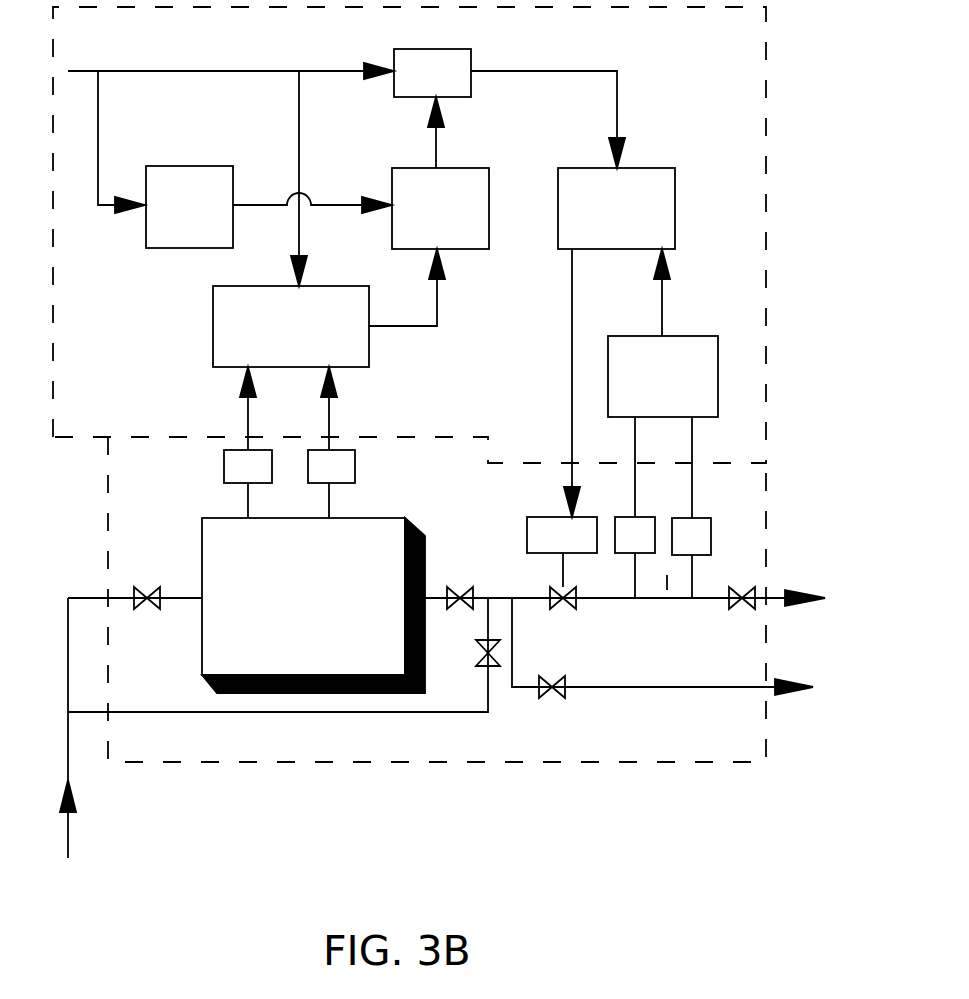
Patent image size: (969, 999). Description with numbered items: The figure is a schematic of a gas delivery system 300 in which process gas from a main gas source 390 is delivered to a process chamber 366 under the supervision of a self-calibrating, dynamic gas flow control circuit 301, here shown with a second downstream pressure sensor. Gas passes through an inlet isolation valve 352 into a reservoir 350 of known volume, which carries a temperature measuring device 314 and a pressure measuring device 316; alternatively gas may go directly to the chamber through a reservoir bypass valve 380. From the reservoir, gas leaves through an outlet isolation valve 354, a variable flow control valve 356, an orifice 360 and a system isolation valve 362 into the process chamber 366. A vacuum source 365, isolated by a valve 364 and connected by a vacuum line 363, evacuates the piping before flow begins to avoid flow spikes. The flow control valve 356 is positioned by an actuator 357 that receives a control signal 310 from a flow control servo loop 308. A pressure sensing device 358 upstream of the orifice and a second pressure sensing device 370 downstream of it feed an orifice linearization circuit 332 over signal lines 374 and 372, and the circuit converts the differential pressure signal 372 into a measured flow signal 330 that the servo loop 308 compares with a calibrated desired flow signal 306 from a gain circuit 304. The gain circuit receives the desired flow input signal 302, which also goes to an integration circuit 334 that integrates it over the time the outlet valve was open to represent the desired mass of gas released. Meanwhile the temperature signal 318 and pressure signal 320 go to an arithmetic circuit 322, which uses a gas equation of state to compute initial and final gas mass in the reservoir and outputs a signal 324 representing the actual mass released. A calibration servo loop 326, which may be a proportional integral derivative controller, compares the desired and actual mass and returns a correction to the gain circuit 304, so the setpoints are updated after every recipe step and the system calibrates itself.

The gas delivery system 300 is at (187, 753).
The self-calibrating, dynamic gas flow control circuit 301 is at (740, 57).
The desired flow input signal 302 is at (281, 71).
The gain circuit 304 is at (432, 73).
The calibrated desired flow signal 306 is at (548, 71).
The flow control servo loop 308 is at (616, 208).
The control signal 310 is at (572, 330).
The temperature measuring device 314 is at (224, 462).
The pressure measuring device 316 is at (355, 470).
The temperature signal 318 is at (248, 413).
The pressure signal 320 is at (329, 423).
The arithmetic circuit 322 is at (291, 219).
The output signal 324 is at (437, 312).
The calibration servo loop 326 is at (440, 173).
The measured flow signal 330 is at (662, 310).
The orifice linearization circuit 332 is at (663, 376).
The integration circuit 334 is at (269, 207).
The reservoir 350 is at (313, 605).
The inlet isolation valve 352 is at (150, 610).
The outlet isolation valve 354 is at (470, 591).
The flow control valve 356 is at (566, 610).
The flow control valve actuator 357 is at (527, 540).
The pressure sensing device 358 is at (618, 553).
The orifice 360 is at (667, 606).
The system isolation valve 362 is at (745, 610).
The vacuum line 363 is at (630, 688).
The valve 364 is at (553, 699).
The vacuum source 365 is at (837, 738).
The process chamber 366 is at (835, 587).
The second pressure sensing device 370 is at (713, 520).
The differential pressure signal 372 is at (692, 450).
The upstream pressure signal line 374 is at (635, 451).
The reservoir bypass valve 380 is at (476, 653).
The main gas source 390 is at (94, 766).